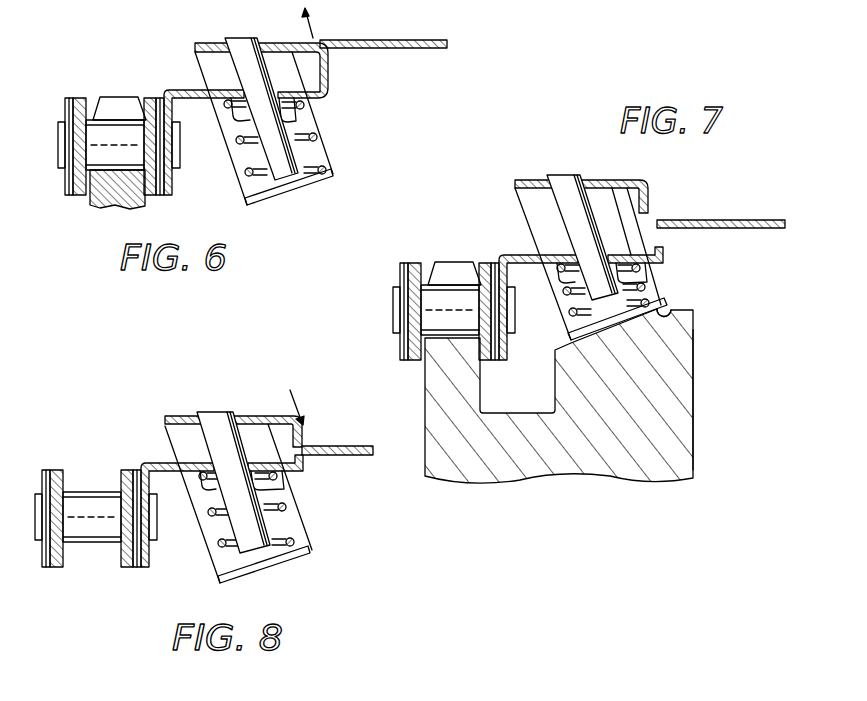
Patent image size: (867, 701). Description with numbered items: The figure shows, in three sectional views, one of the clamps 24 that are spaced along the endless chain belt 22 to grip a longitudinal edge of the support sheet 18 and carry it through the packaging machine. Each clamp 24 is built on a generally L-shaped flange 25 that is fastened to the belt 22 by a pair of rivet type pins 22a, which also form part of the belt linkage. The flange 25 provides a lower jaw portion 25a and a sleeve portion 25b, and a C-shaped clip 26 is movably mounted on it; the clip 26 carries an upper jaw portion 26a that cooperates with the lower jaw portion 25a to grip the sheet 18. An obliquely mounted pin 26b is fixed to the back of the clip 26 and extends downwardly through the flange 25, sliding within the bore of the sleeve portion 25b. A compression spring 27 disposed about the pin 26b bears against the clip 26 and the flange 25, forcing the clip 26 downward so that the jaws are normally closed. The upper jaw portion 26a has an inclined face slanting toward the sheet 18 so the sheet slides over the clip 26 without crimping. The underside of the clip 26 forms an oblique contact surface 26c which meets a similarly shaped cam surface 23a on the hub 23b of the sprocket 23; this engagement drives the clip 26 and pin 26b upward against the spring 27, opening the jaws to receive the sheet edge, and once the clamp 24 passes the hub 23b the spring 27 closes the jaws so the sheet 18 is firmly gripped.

In FIG. 6, the support sheet 18 is at (405, 42).
In FIG. 7, the support sheet 18 is at (745, 220).
In FIG. 8, the support sheet 18 is at (337, 450).
In FIG. 6, the chain belt 22 is at (69, 99).
In FIG. 7, the chain belt 22 is at (398, 283).
In FIG. 8, the chain belt 22 is at (53, 470).
In FIG. 6, the rivet type pin 22a is at (180, 148).
In FIG. 7, the rivet type pin 22a is at (517, 325).
In FIG. 8, the rivet type pin 22a is at (158, 535).
In FIG. 6, the sprocket 23 is at (113, 105).
In FIG. 7, the sprocket 23 is at (565, 379).
In FIG. 7, the cam surface 23a is at (668, 312).
In FIG. 7, the hub 23b is at (690, 358).
In FIG. 6, the clamp 24 is at (279, 127).
In FIG. 7, the clamp 24 is at (616, 223).
In FIG. 8, the clamp 24 is at (244, 464).
In FIG. 6, the L-shaped flange 25 is at (278, 137).
In FIG. 7, the L-shaped flange 25 is at (609, 300).
In FIG. 8, the L-shaped flange 25 is at (247, 511).
In FIG. 6, the lower jaw portion 25a is at (331, 96).
In FIG. 7, the lower jaw portion 25a is at (665, 257).
In FIG. 8, the lower jaw portion 25a is at (305, 470).
In FIG. 6, the sleeve portion 25b is at (300, 118).
In FIG. 6, the C-shaped clip 26 is at (268, 133).
In FIG. 7, the C-shaped clip 26 is at (616, 260).
In FIG. 8, the C-shaped clip 26 is at (244, 500).
In FIG. 6, the upper jaw portion 26a is at (331, 72).
In FIG. 7, the upper jaw portion 26a is at (650, 205).
In FIG. 8, the upper jaw portion 26a is at (305, 443).
In FIG. 6, the obliquely mounted pin 26b is at (298, 157).
In FIG. 7, the obliquely mounted pin 26b is at (567, 210).
In FIG. 8, the obliquely mounted pin 26b is at (215, 445).
In FIG. 6, the oblique contact surface 26c is at (298, 190).
In FIG. 7, the oblique contact surface 26c is at (675, 310).
In FIG. 8, the oblique contact surface 26c is at (298, 560).
In FIG. 6, the compression spring 27 is at (246, 176).
In FIG. 7, the compression spring 27 is at (648, 280).
In FIG. 8, the compression spring 27 is at (290, 510).